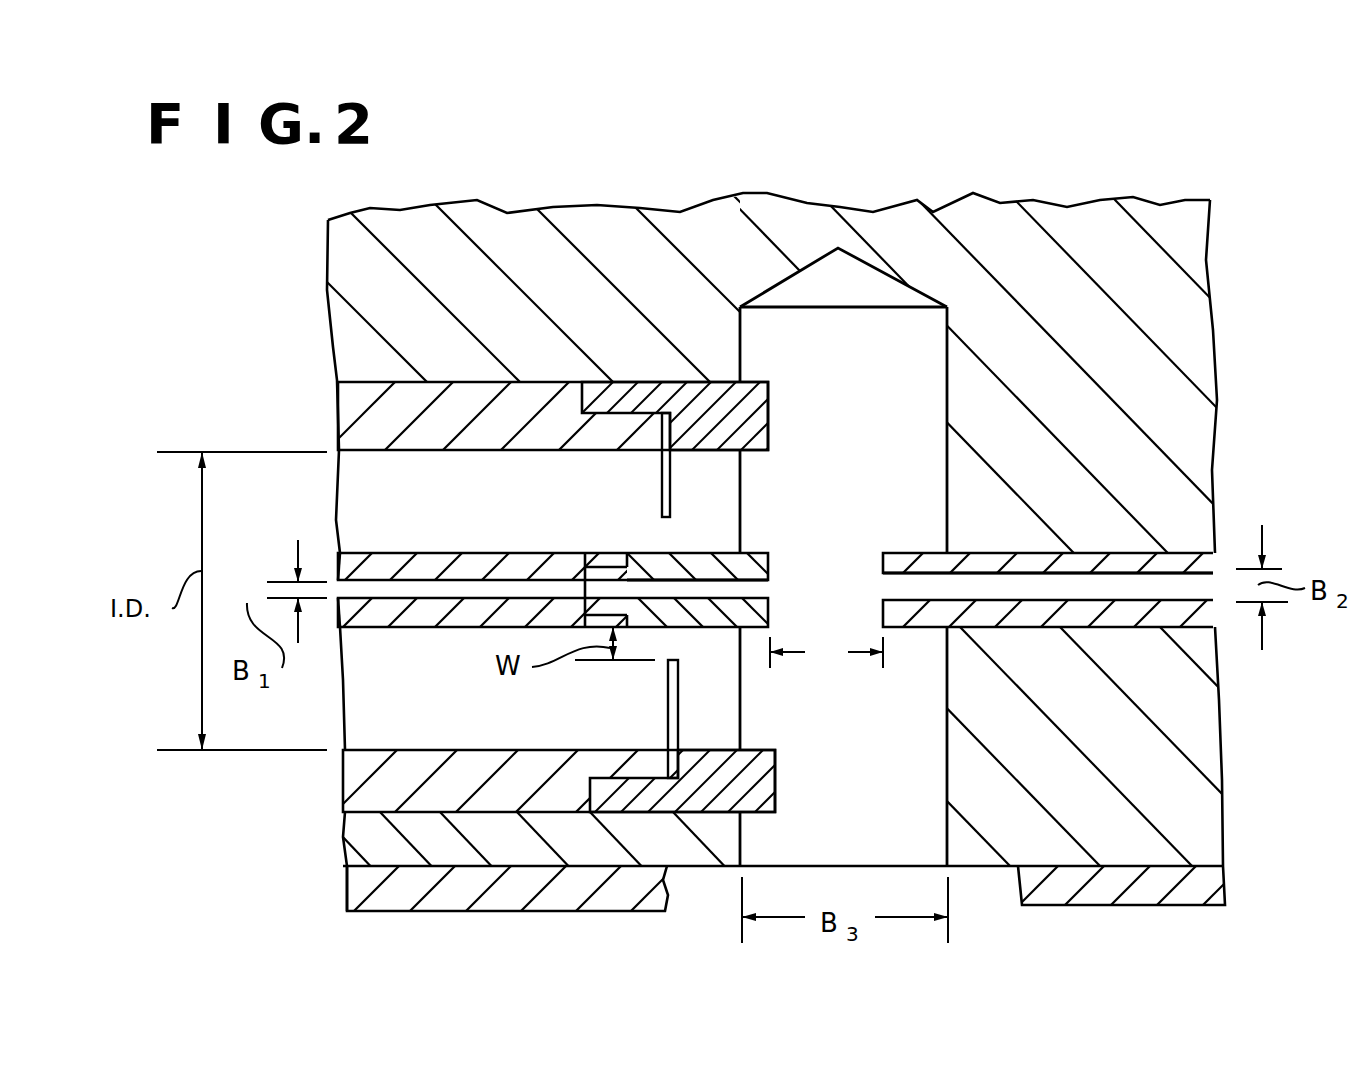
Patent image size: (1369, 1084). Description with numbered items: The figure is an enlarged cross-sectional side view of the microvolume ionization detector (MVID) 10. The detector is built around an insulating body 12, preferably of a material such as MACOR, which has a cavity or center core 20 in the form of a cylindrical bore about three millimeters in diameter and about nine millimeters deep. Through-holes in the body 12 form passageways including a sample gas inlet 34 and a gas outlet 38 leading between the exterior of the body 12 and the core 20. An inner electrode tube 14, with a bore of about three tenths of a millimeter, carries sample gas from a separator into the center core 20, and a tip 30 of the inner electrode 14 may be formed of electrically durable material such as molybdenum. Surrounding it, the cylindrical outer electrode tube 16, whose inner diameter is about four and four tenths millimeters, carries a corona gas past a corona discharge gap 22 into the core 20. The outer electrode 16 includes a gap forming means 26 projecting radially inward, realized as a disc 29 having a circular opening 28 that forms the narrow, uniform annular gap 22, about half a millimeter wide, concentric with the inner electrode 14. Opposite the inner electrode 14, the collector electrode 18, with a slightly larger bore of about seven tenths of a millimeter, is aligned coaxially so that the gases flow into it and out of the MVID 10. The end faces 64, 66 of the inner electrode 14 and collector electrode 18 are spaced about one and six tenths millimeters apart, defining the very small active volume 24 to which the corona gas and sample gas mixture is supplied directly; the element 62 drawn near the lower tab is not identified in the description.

The microvolume ionization detector 10 is at (1226, 308).
The insulating body 12 is at (1155, 770).
The inner electrode tube 14 is at (383, 613).
The outer electrode tube 16 is at (358, 427).
The collector electrode 18 is at (1128, 612).
The center core 20 is at (893, 802).
The corona discharge gap 22 is at (673, 540).
The active volume 24 is at (848, 603).
The gap forming means 26 is at (672, 472).
The circular opening 28 is at (663, 518).
The disc 29 is at (838, 542).
The tip of the inner electrode 30 is at (670, 668).
The sample gas inlet 34 is at (422, 590).
The gas outlet 38 is at (1187, 581).
The lower tab 62 is at (678, 622).
The end face of the inner electrode 64 is at (771, 560).
The end face of the collector electrode 66 is at (880, 563).